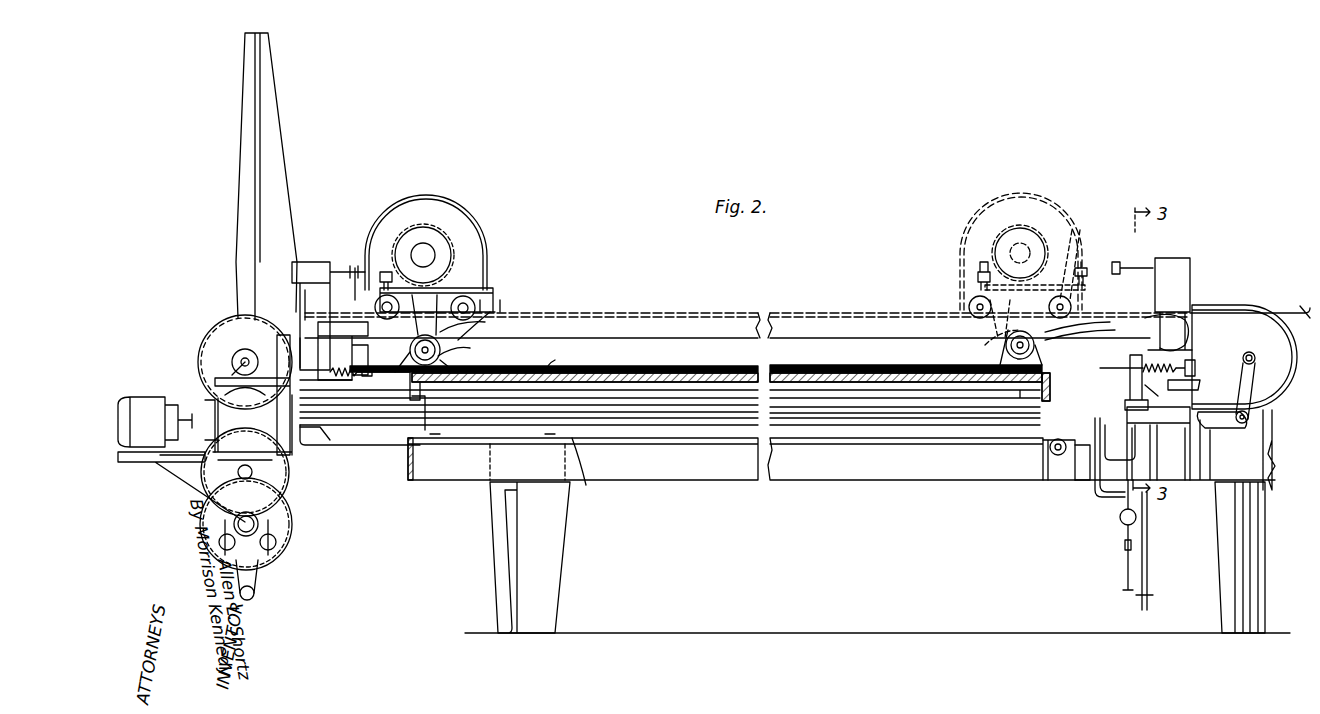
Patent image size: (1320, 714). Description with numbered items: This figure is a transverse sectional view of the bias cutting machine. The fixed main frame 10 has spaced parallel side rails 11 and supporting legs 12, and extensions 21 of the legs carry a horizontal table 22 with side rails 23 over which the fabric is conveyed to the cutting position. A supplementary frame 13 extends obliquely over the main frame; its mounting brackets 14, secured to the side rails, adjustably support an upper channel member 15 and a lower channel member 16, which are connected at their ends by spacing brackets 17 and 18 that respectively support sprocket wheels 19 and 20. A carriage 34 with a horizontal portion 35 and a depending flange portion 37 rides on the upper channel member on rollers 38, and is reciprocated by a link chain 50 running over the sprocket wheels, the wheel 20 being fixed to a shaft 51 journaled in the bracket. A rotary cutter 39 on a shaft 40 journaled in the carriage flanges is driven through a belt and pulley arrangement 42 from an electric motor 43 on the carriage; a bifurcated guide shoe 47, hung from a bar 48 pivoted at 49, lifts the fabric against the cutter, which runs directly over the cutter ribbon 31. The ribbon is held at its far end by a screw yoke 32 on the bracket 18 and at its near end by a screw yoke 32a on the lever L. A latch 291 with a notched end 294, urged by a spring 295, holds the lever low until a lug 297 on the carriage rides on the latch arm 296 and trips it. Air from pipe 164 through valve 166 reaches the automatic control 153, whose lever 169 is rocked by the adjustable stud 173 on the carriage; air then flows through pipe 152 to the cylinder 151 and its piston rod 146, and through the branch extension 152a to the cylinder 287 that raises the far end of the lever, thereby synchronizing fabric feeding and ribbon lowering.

The main frame 10 is at (480, 468).
The side rails 11 is at (410, 470).
The supporting standards or legs 12 is at (500, 574).
The supplementary frame 13 is at (507, 352).
The mounting brackets 14 is at (468, 440).
The channel member 15 is at (532, 326).
The channel member 16 is at (1158, 442).
The spacing bracket 17 is at (1195, 312).
The spacing bracket 18 is at (308, 322).
The sprocket wheel 19 is at (1300, 352).
The sprocket wheel 20 is at (245, 385).
The extensions 21 is at (587, 472).
The horizontal table 22 is at (722, 390).
The side rails 23 is at (400, 398).
The cutter ribbon 31 is at (355, 383).
The screw yoke 32 is at (372, 368).
The screw yoke 32a is at (1178, 362).
The carriage 34 is at (1080, 262).
The horizontal portion of carriage 35 is at (1068, 240).
The flange portion 37 is at (975, 345).
The supporting wheels or rollers 38 is at (968, 300).
The rotary cutter 39 is at (465, 358).
The shaft 40 is at (428, 334).
The belt and pulley arrangement 42 is at (1040, 240).
The electric motor 43 is at (1000, 233).
The guide shoe 47 is at (418, 432).
The bar 48 is at (470, 335).
The pivot 49 is at (498, 312).
The link chain 50 is at (840, 312).
The shaft 51 is at (243, 362).
The piston rod 146 is at (1062, 480).
The cylinder 151 is at (1060, 458).
The pipe 152 is at (1020, 440).
The branch extension 152a is at (1126, 450).
The automatic control 153 is at (340, 338).
The pipe 164 is at (925, 425).
The valve 166 is at (1122, 522).
The lever 169 is at (330, 268).
The adjustable stud 173 is at (355, 266).
The cylinder 287 is at (1148, 418).
The latch 291 is at (1170, 316).
The notched end 294 is at (1190, 390).
The spring 295 is at (1080, 341).
The latch arm 296 is at (1132, 254).
The lug 297 is at (485, 312).